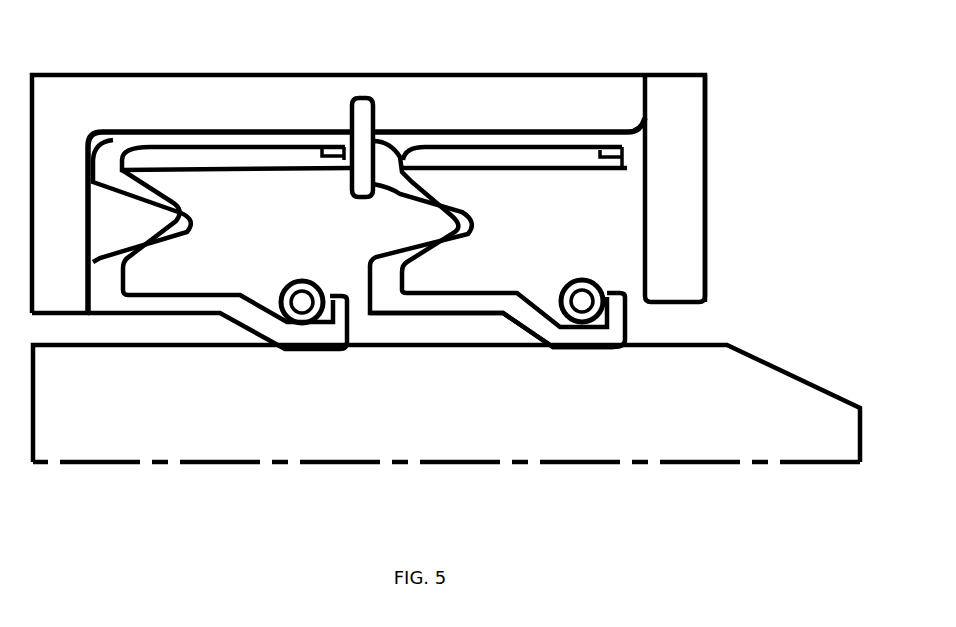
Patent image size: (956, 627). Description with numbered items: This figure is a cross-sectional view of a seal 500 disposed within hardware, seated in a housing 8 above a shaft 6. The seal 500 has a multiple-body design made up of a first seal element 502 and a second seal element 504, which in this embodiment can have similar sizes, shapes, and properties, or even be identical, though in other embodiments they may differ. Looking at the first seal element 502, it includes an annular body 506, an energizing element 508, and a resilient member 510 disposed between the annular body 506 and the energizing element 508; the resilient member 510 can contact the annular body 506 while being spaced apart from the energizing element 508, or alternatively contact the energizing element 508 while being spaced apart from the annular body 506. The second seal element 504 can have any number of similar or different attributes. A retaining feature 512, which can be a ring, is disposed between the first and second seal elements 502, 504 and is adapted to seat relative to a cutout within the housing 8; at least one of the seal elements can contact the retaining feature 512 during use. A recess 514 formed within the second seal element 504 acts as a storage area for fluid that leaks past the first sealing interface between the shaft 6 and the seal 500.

The housing 8 is at (101, 97).
The seal 500 is at (624, 189).
The first seal element 502 is at (548, 138).
The second seal element 504 is at (262, 138).
The annular body 506 is at (488, 308).
The energizing element 508 is at (211, 315).
The resilient member 510 is at (482, 162).
The retaining feature 512 is at (370, 112).
The recess 514 is at (262, 238).
The shaft 6 is at (122, 452).